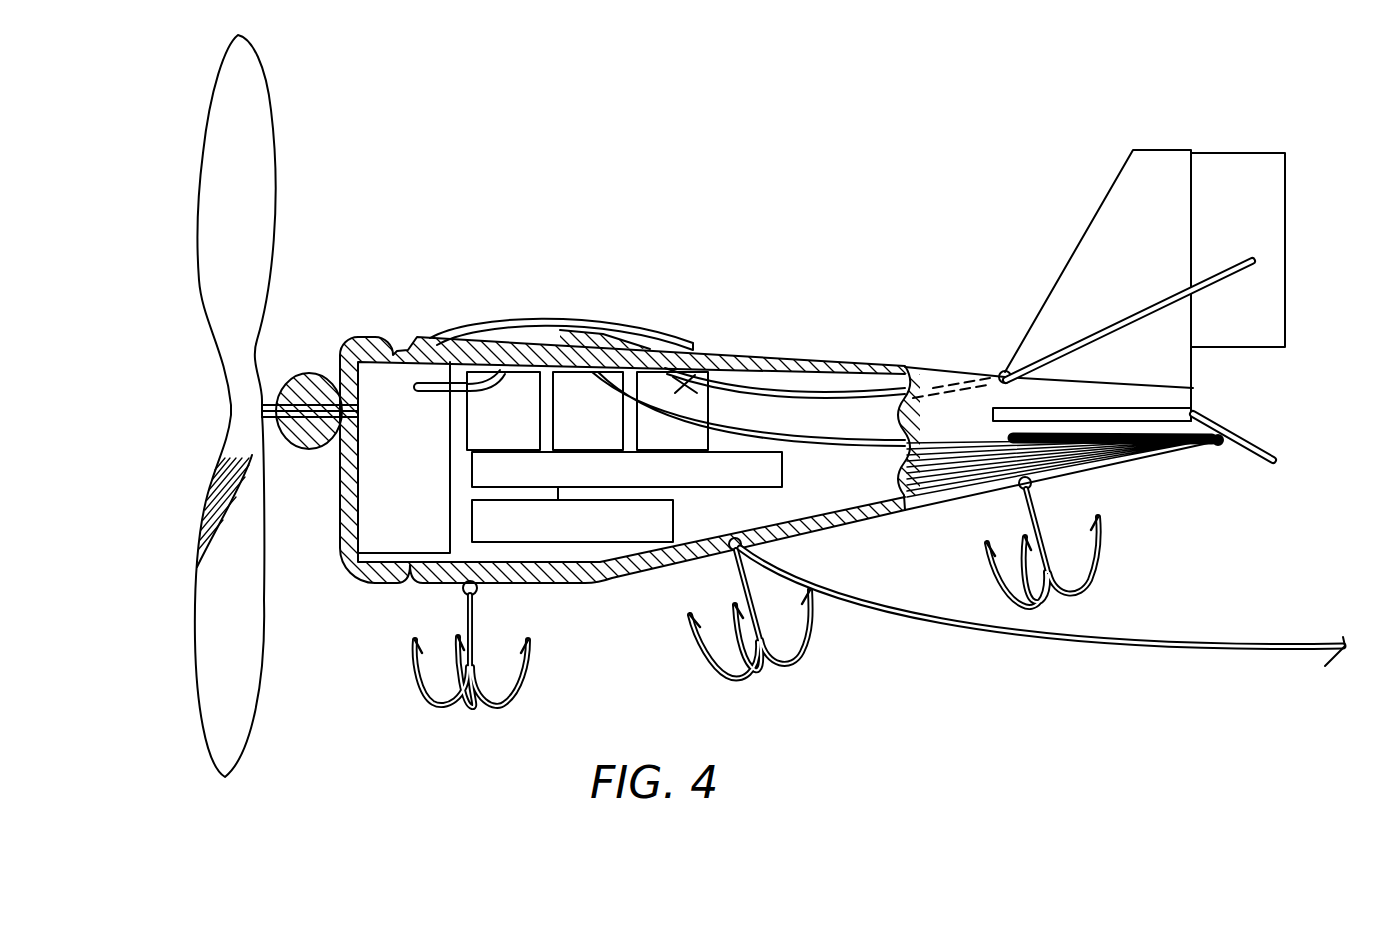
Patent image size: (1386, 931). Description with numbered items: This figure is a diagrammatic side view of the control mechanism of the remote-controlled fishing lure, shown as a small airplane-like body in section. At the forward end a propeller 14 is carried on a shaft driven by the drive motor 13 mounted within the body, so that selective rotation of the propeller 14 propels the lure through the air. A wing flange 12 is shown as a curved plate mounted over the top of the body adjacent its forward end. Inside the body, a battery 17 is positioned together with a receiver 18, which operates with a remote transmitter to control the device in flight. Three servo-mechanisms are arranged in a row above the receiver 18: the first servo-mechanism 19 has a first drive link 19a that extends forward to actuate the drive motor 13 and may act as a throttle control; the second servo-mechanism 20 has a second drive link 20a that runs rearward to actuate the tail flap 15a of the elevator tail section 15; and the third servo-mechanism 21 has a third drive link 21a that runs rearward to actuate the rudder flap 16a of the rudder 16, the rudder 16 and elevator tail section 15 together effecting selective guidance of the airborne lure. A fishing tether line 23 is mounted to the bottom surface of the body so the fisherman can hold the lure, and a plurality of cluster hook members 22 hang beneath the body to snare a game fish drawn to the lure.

The wing flange 12 is at (493, 330).
The drive motor 13 is at (380, 380).
The propeller 14 is at (250, 295).
The elevator tail section 15 is at (1160, 414).
The tail flap 15a is at (1240, 430).
The rudder 16 is at (1100, 236).
The rudder flap 16a is at (1263, 322).
The battery 17 is at (655, 520).
The receiver 18 is at (765, 470).
The first servo-mechanism 19 is at (508, 387).
The first drive link 19a is at (437, 388).
The second servo-mechanism 20 is at (583, 393).
The second drive link 20a is at (675, 393).
The third servo-mechanism 21 is at (715, 358).
The third drive link 21a is at (802, 392).
The hook members 22 is at (472, 632).
The fishing tether line 23 is at (957, 620).